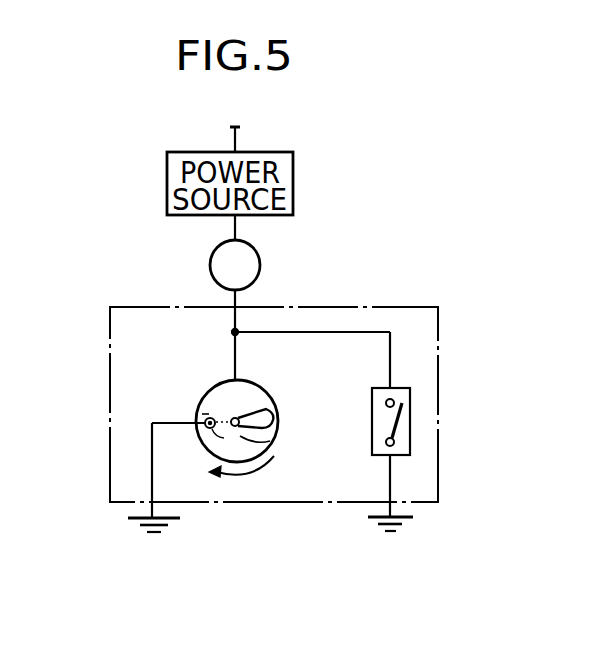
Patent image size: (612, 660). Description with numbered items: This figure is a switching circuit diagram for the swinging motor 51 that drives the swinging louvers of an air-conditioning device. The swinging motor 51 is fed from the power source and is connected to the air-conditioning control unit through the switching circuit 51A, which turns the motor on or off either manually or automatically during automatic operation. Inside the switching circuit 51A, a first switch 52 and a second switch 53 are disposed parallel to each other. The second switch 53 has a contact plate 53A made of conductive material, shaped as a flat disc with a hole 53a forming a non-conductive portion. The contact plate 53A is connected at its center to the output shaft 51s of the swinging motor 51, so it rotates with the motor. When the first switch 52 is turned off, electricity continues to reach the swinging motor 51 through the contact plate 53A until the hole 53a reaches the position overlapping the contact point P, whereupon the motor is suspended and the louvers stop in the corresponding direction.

The swinging motor 51 is at (260, 258).
The switching circuit 51A is at (408, 304).
The first switch 52 is at (412, 392).
The second switch 53 is at (207, 385).
The contact plate 53A is at (197, 406).
The hole 53a is at (266, 413).
The output shaft 51s is at (278, 435).
The contact point P is at (206, 438).